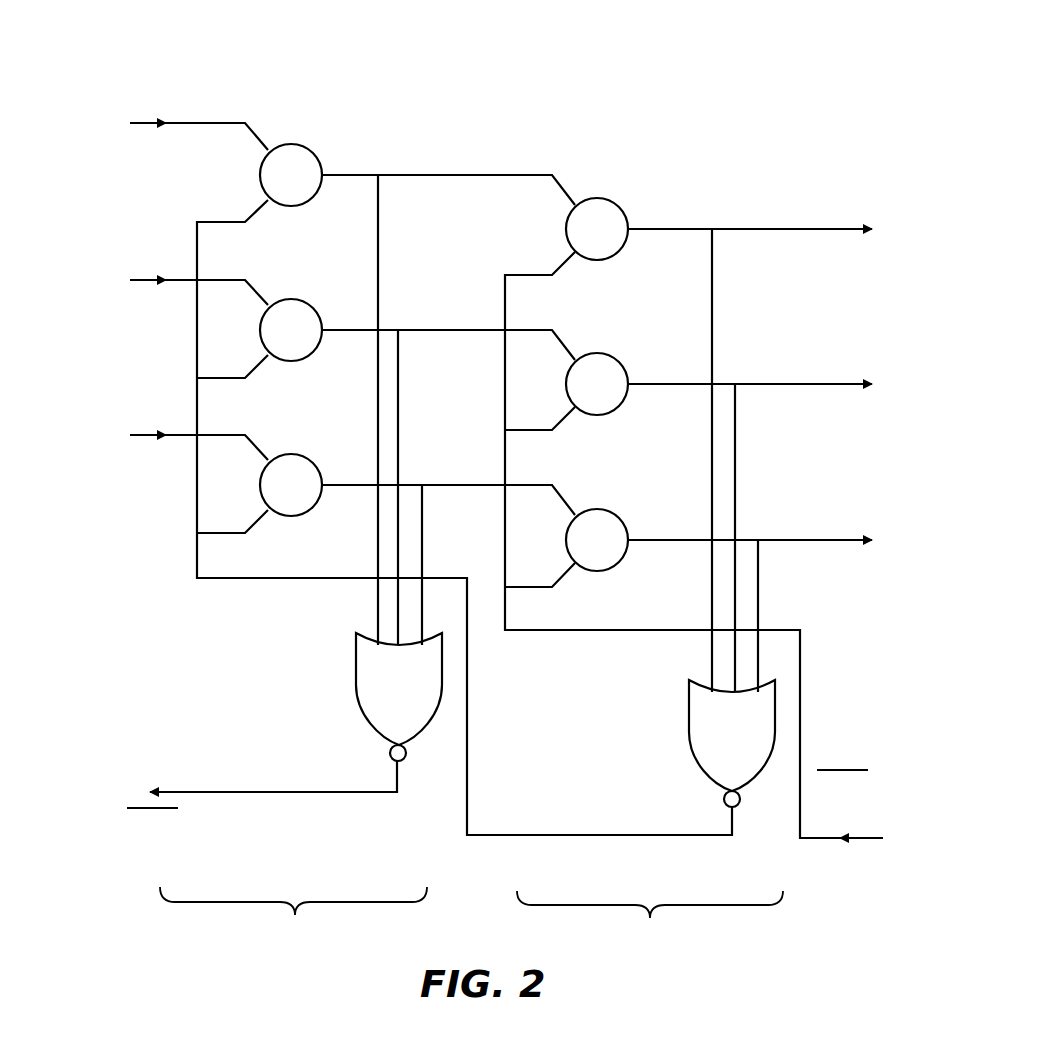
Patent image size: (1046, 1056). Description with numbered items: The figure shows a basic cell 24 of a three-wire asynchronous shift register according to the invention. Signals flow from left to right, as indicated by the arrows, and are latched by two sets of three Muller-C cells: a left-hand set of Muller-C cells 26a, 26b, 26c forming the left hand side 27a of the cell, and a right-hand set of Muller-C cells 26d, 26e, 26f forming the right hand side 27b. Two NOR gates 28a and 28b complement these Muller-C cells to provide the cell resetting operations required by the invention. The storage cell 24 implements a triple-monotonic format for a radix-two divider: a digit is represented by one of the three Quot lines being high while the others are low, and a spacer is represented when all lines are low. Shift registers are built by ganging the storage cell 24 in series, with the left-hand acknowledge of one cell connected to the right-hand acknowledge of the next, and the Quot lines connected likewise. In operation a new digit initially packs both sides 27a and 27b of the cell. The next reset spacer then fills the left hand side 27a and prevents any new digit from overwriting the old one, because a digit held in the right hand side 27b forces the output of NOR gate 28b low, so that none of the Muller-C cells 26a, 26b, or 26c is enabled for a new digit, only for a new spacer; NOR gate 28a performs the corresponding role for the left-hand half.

The basic cell 24 is at (432, 92).
The Muller-C cell 26a is at (307, 147).
The Muller-C cell 26b is at (307, 302).
The Muller-C cell 26c is at (307, 457).
The Muller-C cell 26d is at (614, 201).
The Muller-C cell 26e is at (614, 357).
The Muller-C cell 26f is at (614, 512).
The left hand side 27a is at (293, 921).
The right hand side 27b is at (650, 925).
The NOR gate 28a is at (368, 677).
The NOR gate 28b is at (707, 715).